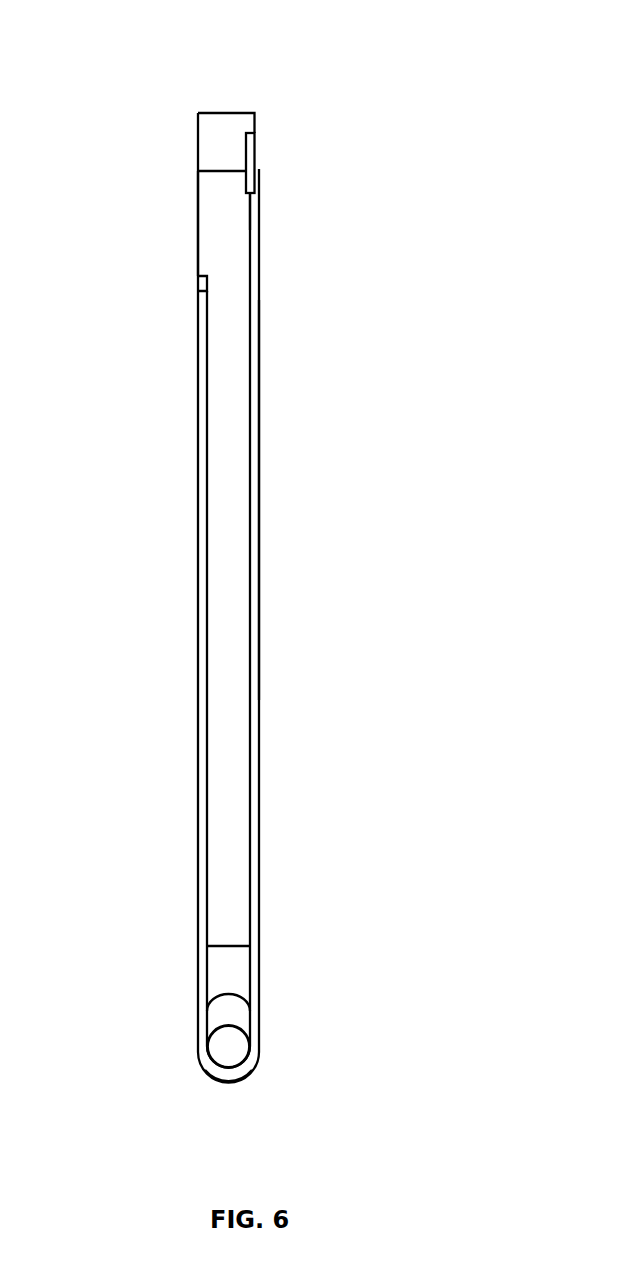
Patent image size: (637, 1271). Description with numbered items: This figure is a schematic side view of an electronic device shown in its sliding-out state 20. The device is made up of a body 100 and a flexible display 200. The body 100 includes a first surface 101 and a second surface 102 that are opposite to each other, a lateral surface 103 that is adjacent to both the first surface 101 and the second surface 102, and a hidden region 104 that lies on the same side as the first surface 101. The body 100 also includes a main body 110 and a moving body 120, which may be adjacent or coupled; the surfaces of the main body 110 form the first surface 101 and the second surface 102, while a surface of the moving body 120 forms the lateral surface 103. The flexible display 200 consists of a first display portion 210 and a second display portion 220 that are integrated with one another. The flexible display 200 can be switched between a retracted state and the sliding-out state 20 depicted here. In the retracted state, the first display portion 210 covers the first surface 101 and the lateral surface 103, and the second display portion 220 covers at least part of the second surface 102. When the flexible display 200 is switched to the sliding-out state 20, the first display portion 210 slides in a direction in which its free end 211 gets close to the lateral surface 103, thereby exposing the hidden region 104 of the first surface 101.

The sliding-out state 20 is at (98, 61).
The body 100 is at (230, 157).
The first surface 101 is at (253, 128).
The second surface 102 is at (197, 228).
The lateral surface 103 is at (237, 1077).
The hidden region 104 is at (253, 165).
The main body 110 is at (230, 935).
The moving body 120 is at (233, 1060).
The flexible display 200 is at (377, 495).
The first display portion 210 is at (252, 710).
The free end 211 is at (260, 232).
The second display portion 220 is at (198, 611).